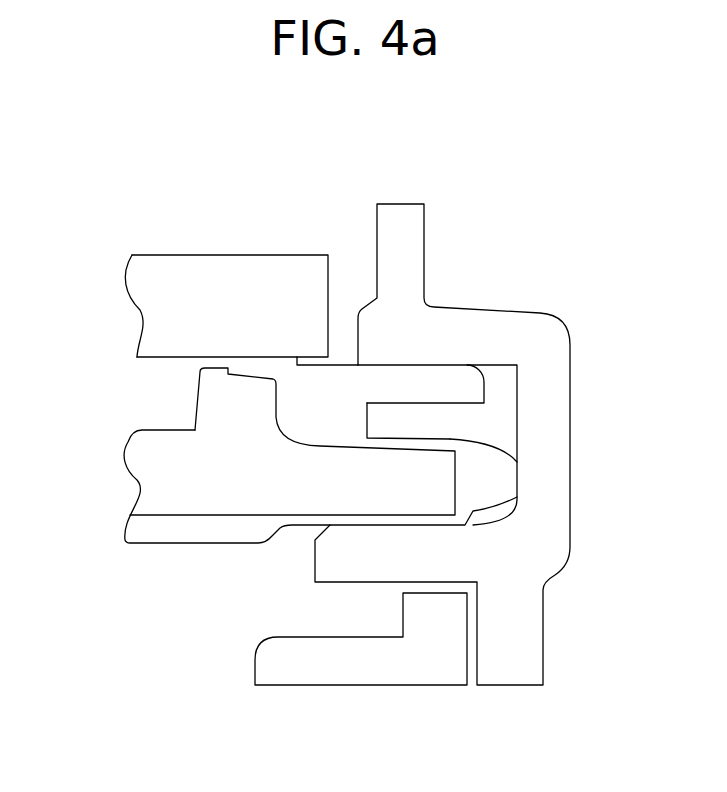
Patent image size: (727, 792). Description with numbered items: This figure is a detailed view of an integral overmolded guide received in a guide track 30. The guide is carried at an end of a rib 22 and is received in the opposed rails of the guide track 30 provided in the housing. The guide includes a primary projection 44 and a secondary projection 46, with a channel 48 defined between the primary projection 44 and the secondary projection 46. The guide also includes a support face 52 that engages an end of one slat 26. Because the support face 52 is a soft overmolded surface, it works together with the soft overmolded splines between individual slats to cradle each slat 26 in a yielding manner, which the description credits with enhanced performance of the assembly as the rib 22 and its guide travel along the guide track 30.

The rib 22 is at (167, 476).
The slat 26 is at (252, 278).
The guide track 30 is at (503, 365).
The primary projection 44 is at (495, 480).
The secondary projection 46 is at (462, 385).
The channel 48 is at (406, 425).
The support face 52 is at (250, 362).